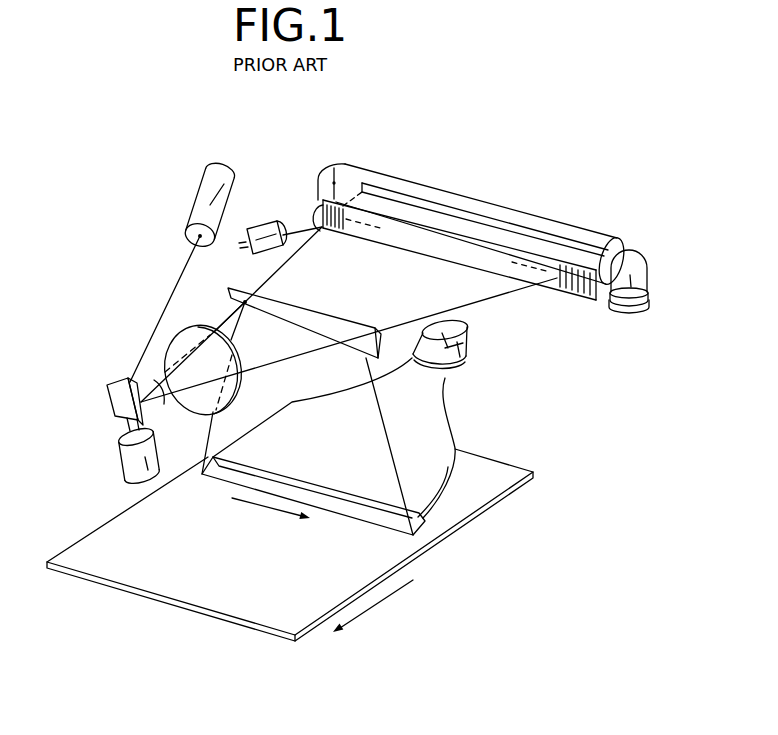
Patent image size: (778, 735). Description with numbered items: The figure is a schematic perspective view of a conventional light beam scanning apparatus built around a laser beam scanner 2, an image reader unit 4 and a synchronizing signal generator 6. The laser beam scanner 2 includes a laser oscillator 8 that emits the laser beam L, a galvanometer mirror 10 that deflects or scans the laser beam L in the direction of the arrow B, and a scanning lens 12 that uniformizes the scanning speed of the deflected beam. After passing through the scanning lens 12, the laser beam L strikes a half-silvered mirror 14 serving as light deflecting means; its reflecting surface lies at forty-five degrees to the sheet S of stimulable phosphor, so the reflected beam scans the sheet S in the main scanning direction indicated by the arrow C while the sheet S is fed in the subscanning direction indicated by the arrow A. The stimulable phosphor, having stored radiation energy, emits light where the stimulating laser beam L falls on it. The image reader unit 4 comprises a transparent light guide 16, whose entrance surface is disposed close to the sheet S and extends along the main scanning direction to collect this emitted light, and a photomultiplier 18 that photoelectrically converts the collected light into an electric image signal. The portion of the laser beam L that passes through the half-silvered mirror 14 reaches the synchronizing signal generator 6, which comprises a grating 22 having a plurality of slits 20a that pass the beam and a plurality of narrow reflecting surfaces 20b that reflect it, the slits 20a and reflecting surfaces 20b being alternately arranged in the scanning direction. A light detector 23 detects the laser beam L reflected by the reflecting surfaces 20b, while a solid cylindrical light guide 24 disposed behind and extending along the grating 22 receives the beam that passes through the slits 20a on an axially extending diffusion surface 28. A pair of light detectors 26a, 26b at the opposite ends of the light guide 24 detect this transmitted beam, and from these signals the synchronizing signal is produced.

The laser beam scanner 2 is at (114, 277).
The image reader unit 4 is at (483, 422).
The synchronizing signal generator 6 is at (403, 161).
The laser oscillator 8 is at (205, 197).
The galvanometer mirror 10 is at (117, 405).
The scanning lens 12 is at (190, 327).
The half-silvered mirror 14 is at (297, 323).
The transparent light guide 16 is at (427, 483).
The photomultiplier 18 is at (463, 358).
The slits 20a is at (577, 297).
The narrow reflecting surfaces 20b is at (593, 304).
The grating 22 is at (430, 242).
The light detector 23 is at (258, 226).
The solid cylindrical light guide 24 is at (488, 207).
The light detector 26a is at (632, 258).
The light detector 26b is at (331, 171).
The diffusion surface 28 is at (547, 238).
The laser beam L is at (173, 287).
The deflection direction arrow B is at (349, 353).
The stimulable phosphor sheet S is at (150, 570).
The subscanning direction arrow A is at (359, 616).
The main scanning direction arrow C is at (280, 520).